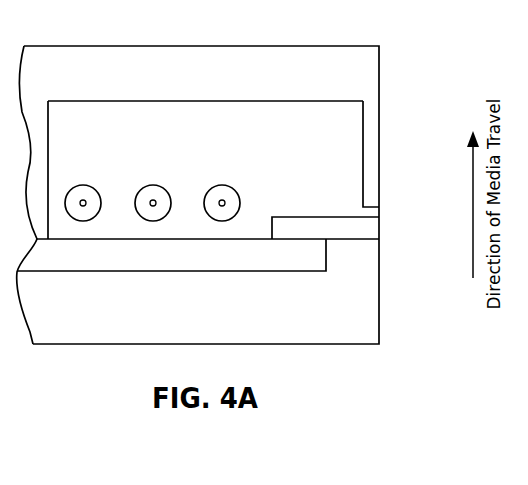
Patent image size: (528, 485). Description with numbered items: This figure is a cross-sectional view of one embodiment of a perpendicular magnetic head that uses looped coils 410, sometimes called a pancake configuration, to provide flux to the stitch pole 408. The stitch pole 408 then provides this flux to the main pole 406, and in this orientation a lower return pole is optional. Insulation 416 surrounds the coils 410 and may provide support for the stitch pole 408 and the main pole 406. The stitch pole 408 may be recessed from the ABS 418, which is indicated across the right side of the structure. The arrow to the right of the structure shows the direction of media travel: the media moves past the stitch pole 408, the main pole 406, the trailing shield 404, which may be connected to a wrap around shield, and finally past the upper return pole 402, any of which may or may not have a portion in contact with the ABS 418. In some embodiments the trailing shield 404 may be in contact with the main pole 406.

The upper return pole 402 is at (286, 81).
The trailing shield 404 is at (380, 136).
The main pole 406 is at (380, 224).
The stitch pole 408 is at (231, 263).
The looped coils 410 is at (82, 185).
The insulation 416 is at (325, 176).
The ABS 418 is at (381, 63).